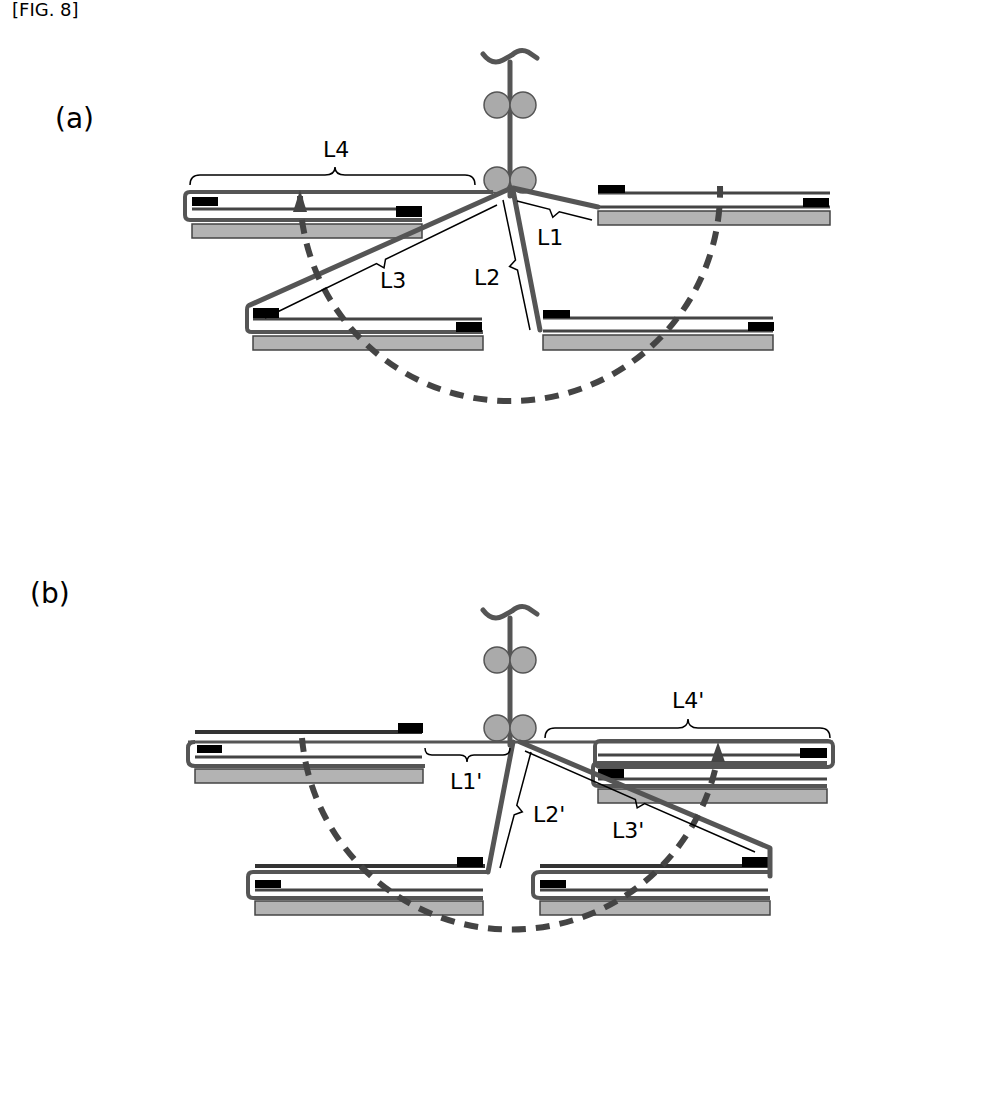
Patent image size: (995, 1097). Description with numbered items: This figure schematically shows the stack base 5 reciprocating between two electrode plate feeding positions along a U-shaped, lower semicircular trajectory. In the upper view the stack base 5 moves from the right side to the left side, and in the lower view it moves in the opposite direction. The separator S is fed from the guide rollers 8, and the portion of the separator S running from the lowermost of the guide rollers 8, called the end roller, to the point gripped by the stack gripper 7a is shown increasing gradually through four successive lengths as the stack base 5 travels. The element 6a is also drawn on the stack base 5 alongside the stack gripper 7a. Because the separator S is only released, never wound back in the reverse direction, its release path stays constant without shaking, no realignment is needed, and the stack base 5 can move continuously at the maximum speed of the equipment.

The guide rollers 8 is at (523, 180).
The separator S is at (568, 200).
The stack gripper 7a is at (620, 187).
The leading edge regulating member 6a is at (828, 192).
The stack base 5 is at (745, 220).